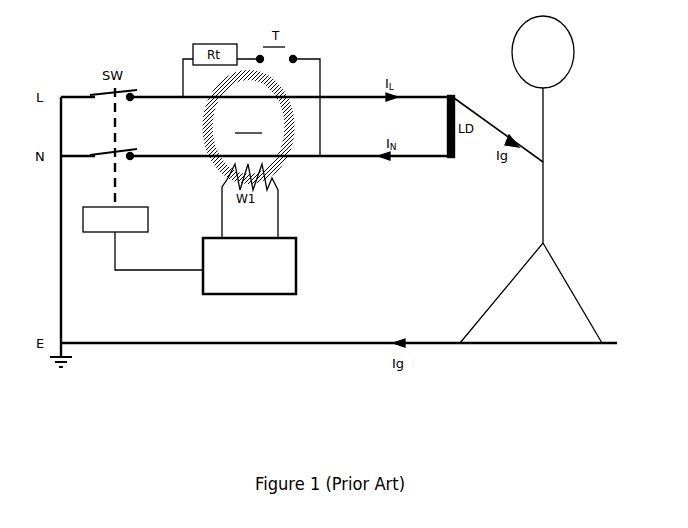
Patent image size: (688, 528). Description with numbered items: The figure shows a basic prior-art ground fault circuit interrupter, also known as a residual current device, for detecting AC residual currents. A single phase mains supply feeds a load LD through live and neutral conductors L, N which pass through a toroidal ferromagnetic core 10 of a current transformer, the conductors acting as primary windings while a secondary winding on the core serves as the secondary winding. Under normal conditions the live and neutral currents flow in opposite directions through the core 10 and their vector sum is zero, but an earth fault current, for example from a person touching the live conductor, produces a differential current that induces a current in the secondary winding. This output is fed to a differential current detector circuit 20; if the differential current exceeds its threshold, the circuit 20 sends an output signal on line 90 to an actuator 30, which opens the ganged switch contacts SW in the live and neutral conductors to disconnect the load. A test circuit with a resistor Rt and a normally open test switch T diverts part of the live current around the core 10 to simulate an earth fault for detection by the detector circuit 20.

The toroidal ferromagnetic core 10 is at (204, 125).
The differential current detector circuit 20 is at (298, 268).
The actuator 30 is at (150, 214).
The line 90 is at (168, 272).